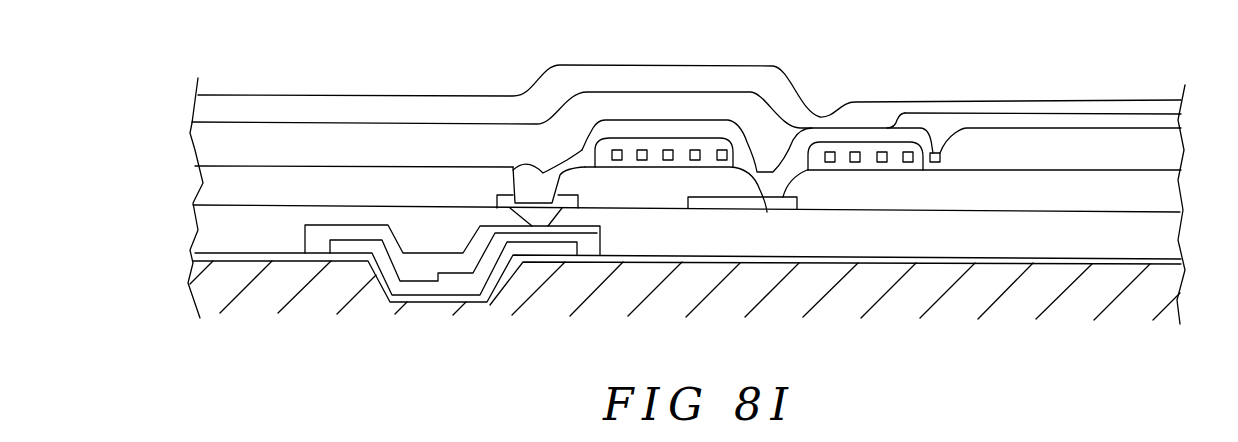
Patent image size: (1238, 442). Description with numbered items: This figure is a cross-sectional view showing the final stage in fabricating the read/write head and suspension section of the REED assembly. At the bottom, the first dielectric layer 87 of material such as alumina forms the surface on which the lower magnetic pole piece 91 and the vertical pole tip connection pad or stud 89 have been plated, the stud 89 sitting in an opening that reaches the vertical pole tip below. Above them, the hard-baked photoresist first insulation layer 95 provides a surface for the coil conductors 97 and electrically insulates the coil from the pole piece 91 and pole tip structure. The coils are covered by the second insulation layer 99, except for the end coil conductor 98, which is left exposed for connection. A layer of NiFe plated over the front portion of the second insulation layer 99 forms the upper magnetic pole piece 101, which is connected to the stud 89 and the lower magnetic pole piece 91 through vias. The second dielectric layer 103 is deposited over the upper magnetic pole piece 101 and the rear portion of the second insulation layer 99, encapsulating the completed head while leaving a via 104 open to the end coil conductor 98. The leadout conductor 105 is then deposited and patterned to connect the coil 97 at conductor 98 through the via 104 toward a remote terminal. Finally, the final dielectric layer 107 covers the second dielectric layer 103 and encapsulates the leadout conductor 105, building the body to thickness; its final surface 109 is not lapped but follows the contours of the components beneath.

The first dielectric layer 87 is at (845, 240).
The vertical pole tip connection pad or stud 89 is at (538, 213).
The lower magnetic pole piece 91 is at (737, 203).
The first insulation layer 95 is at (750, 187).
The coil conductors 97 is at (643, 148).
The end coil conductor 98 is at (940, 157).
The second insulation layer 99 is at (725, 143).
The upper magnetic pole piece 101 is at (682, 127).
The second dielectric layer 103 is at (405, 148).
The via 104 is at (945, 126).
The leadout conductor 105 is at (932, 127).
The final dielectric layer 107 is at (423, 108).
The final surface 109 is at (916, 122).